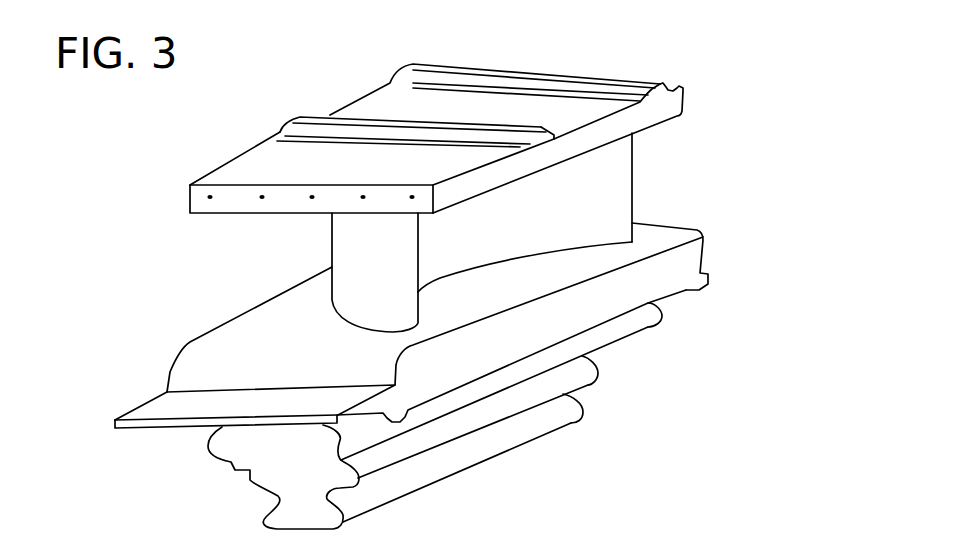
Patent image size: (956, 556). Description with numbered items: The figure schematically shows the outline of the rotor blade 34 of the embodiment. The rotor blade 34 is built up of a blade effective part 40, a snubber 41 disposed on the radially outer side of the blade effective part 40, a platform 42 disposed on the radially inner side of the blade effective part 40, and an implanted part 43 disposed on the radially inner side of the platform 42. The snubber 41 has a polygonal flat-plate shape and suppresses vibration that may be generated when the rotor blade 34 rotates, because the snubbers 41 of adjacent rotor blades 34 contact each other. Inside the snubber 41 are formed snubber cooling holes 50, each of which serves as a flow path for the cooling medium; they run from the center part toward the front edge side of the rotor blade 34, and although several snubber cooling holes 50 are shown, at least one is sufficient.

The rotor blade 34 is at (651, 60).
The blade effective part 40 is at (353, 249).
The snubber 41 is at (250, 168).
The platform 42 is at (213, 347).
The implanted part 43 is at (222, 450).
The snubber cooling holes 50 is at (210, 195).